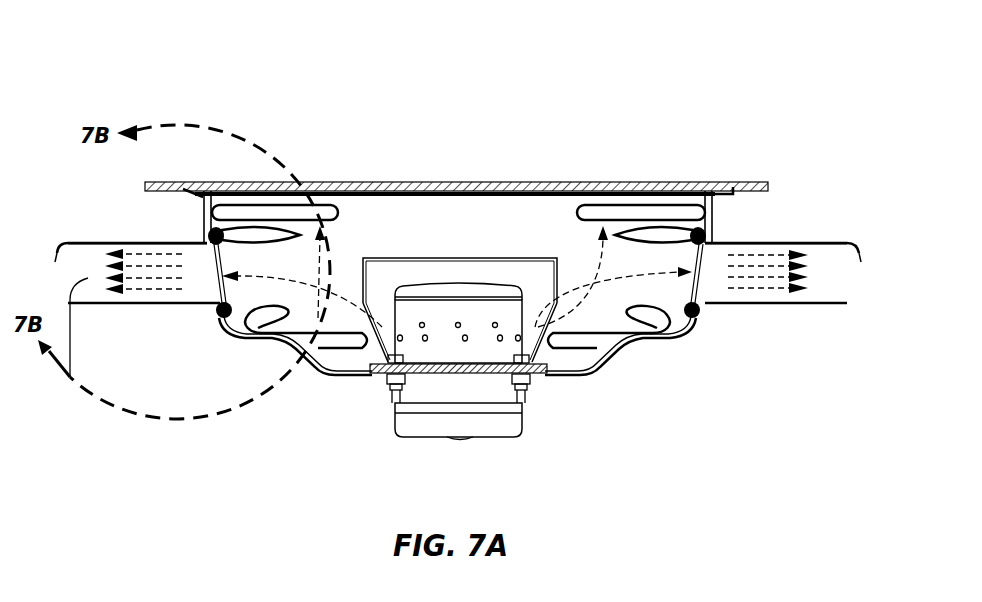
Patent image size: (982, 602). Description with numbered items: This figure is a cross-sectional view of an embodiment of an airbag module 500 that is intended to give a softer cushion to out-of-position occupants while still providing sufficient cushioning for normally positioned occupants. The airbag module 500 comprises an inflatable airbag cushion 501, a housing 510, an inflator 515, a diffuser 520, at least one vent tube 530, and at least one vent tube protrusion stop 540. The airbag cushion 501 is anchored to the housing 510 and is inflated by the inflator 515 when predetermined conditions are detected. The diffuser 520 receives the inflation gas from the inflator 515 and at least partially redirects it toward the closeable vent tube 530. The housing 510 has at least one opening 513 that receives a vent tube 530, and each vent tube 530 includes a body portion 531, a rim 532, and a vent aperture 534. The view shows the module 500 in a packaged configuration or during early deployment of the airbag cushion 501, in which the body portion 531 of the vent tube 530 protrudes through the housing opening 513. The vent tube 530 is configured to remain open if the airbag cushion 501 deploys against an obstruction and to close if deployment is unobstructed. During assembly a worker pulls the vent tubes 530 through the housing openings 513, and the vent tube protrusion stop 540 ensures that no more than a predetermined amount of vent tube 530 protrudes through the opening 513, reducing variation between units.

The airbag module 500 is at (492, 81).
The inflatable airbag cushion 501 is at (238, 338).
The housing 510 is at (670, 340).
The opening 513 is at (210, 326).
The inflator 515 is at (442, 352).
The diffuser 520 is at (500, 256).
The vent tube 530 is at (123, 243).
The body portion 531 is at (92, 242).
The rim 532 is at (56, 252).
The vent aperture 534 is at (68, 381).
The vent tube protrusion stop 540 is at (220, 285).